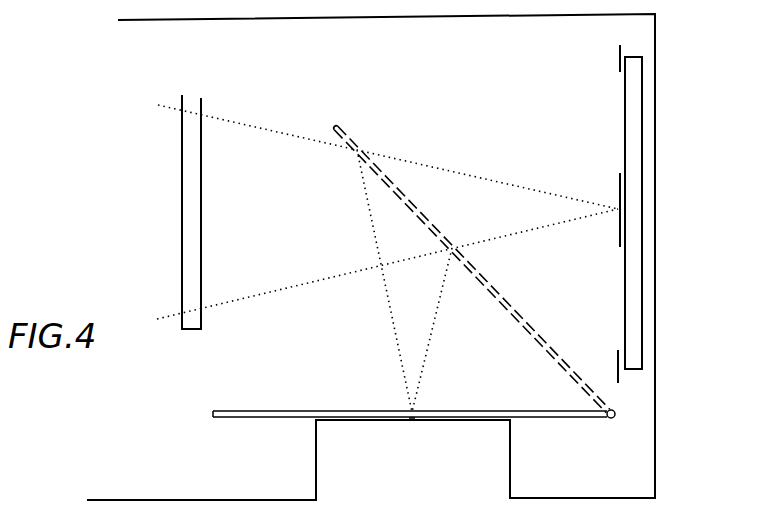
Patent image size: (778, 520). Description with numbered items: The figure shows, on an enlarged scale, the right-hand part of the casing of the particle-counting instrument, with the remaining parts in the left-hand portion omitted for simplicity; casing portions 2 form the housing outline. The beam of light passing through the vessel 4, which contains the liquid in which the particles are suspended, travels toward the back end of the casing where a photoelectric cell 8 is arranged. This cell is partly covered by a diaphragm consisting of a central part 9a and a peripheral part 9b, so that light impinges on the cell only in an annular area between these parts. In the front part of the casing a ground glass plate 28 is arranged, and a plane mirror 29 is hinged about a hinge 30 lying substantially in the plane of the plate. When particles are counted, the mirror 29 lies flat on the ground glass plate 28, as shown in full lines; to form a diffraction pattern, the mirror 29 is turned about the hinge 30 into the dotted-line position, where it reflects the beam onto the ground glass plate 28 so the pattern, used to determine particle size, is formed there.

The part-cylindrical portions of casing 2 is at (531, 17).
The vessel 4 is at (183, 94).
The photoelectric cell 8 is at (633, 115).
The central part of diaphragm 9a is at (620, 183).
The peripheral part of diaphragm 9b is at (620, 58).
The ground glass plate 28 is at (403, 419).
The plane mirror 29 is at (521, 311).
The hinge 30 is at (607, 419).